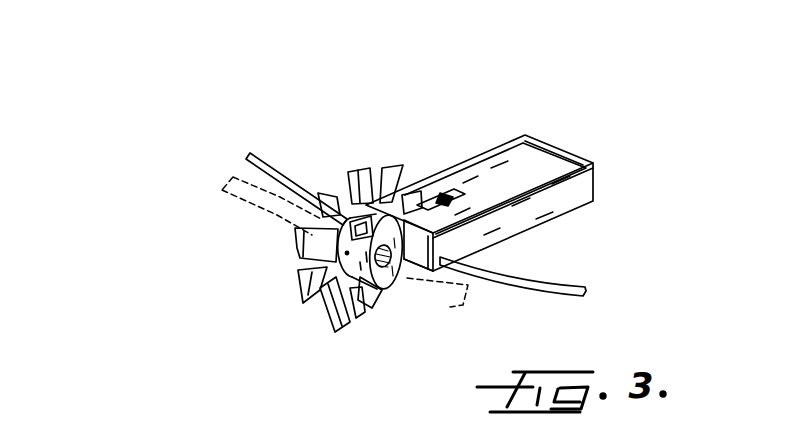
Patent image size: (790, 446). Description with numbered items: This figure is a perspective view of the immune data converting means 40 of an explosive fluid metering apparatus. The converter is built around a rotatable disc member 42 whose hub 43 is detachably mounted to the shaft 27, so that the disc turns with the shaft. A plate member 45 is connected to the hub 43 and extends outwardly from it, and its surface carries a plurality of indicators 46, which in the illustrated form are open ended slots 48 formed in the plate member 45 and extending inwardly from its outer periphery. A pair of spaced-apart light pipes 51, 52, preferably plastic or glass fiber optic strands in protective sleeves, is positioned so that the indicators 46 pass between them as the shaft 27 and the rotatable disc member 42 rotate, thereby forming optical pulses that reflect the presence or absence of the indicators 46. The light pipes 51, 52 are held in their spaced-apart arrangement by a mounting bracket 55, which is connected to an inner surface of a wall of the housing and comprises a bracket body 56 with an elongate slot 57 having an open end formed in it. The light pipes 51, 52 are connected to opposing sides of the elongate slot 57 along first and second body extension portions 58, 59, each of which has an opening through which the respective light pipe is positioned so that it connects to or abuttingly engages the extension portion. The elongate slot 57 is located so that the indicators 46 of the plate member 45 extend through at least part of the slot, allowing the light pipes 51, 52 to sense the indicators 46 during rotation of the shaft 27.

The immune data converting means 40 is at (163, 158).
The shaft 27 is at (231, 176).
The rotatable disc member 42 is at (289, 282).
The hub 43 is at (342, 292).
The plate member 45 is at (304, 236).
The indicators 46 is at (350, 206).
The open ended slots 48 is at (318, 276).
The light pipe 51 is at (531, 281).
The light pipe 52 is at (280, 171).
The mounting bracket 55 is at (558, 98).
The bracket body 56 is at (559, 150).
The elongate slot 57 is at (440, 200).
The first body extension portion 58 is at (420, 276).
The second body extension portion 59 is at (416, 205).